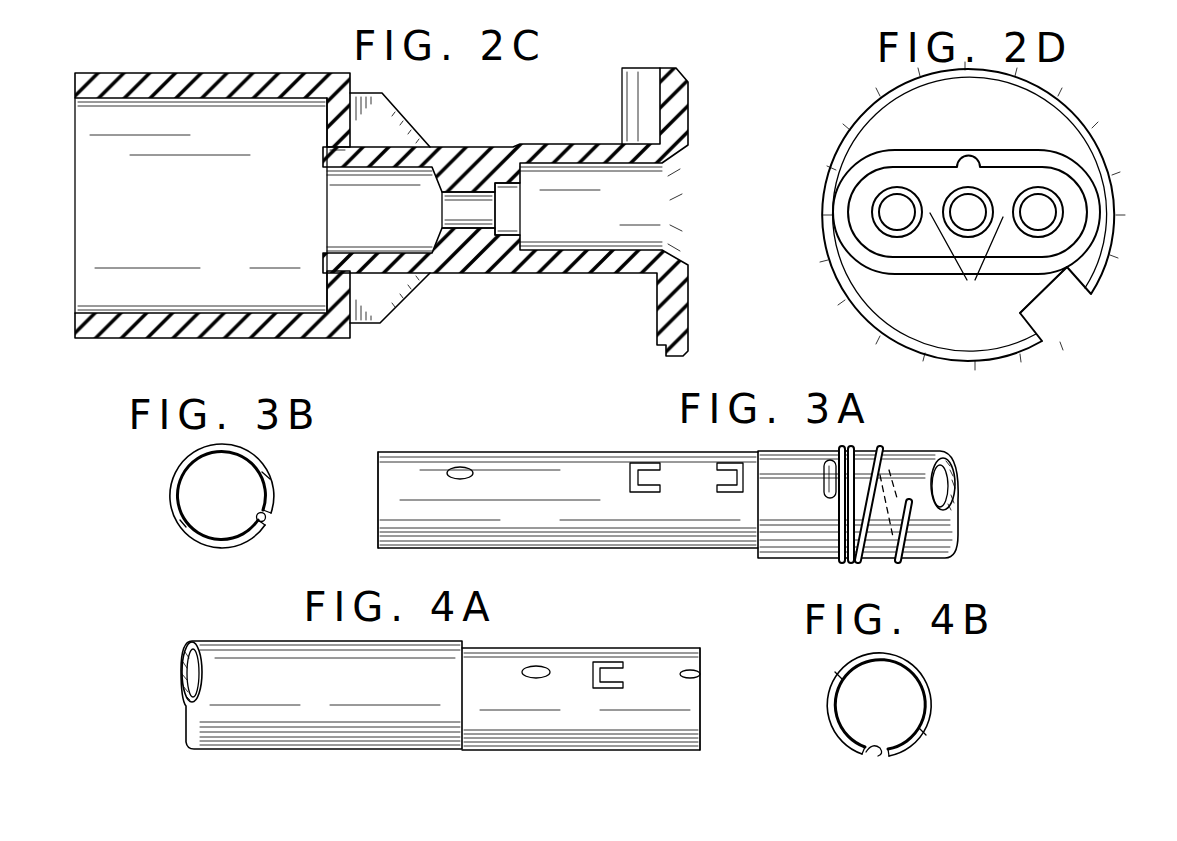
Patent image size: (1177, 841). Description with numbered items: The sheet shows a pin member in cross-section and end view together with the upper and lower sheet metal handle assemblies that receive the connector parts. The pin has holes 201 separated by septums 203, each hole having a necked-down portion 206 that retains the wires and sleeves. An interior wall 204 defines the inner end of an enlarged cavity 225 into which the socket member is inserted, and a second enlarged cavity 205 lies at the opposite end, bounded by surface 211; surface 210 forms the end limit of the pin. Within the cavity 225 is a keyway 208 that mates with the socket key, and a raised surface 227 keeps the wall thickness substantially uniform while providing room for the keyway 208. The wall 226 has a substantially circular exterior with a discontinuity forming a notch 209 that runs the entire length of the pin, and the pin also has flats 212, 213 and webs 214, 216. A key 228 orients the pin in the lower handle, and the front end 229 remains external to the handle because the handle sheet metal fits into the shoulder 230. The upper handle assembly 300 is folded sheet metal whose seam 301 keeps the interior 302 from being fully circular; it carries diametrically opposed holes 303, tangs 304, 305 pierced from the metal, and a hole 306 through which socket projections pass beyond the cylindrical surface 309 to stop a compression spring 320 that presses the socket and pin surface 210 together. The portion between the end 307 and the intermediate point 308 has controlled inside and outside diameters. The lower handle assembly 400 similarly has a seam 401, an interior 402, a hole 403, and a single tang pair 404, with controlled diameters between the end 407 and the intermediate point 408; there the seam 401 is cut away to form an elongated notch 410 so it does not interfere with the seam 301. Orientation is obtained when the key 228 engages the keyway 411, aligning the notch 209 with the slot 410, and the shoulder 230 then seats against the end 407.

In FIG. 2C, the holes 201 is at (512, 208).
In FIG. 2D, the holes 201 is at (960, 217).
In FIG. 2D, the septums 203 is at (966, 260).
In FIG. 2C, the interior wall 204 is at (527, 243).
In FIG. 2C, the enlarged cavity 205 is at (172, 216).
In FIG. 2C, the necked-down portion 206 is at (449, 222).
In FIG. 2D, the necked-down portion 206 is at (890, 192).
In FIG. 2C, the keyway 208 is at (560, 163).
In FIG. 2D, the keyway 208 is at (972, 163).
In FIG. 2D, the notch 209 is at (1047, 297).
In FIG. 2C, the surface 210 is at (690, 92).
In FIG. 2D, the surface 210 is at (910, 331).
In FIG. 2C, the surface 211 is at (323, 130).
In FIG. 2C, the flat 212 is at (448, 146).
In FIG. 2C, the flat 213 is at (500, 274).
In FIG. 2C, the web 214 is at (385, 118).
In FIG. 2C, the web 216 is at (393, 292).
In FIG. 2C, the enlarged cavity 225 is at (604, 220).
In FIG. 2C, the wall 226 is at (208, 82).
In FIG. 2C, the raised surface 227 is at (588, 143).
In FIG. 2C, the key 228 is at (640, 78).
In FIG. 2C, the front end 229 is at (684, 338).
In FIG. 2C, the shoulder 230 is at (662, 349).
In FIG. 3A, the upper handle assembly 300 is at (568, 433).
In FIG. 3B, the seam 301 is at (267, 517).
In FIG. 3A, the seam 301 is at (632, 520).
In FIG. 3B, the interior 302 is at (202, 493).
In FIG. 3B, the holes 303 is at (267, 473).
In FIG. 3A, the holes 303 is at (458, 469).
In FIG. 3A, the tang 304 is at (645, 475).
In FIG. 3A, the tang 305 is at (730, 477).
In FIG. 3A, the hole 306 is at (826, 476).
In FIG. 3A, the end 307 is at (378, 523).
In FIG. 3A, the intermediate point 308 is at (758, 532).
In FIG. 3A, the cylindrical surface 309 is at (955, 468).
In FIG. 3A, the compression spring 320 is at (880, 470).
In FIG. 4A, the lower handle assembly 400 is at (633, 630).
In FIG. 4A, the seam 401 is at (383, 732).
In FIG. 4B, the seam 401 is at (888, 748).
In FIG. 4B, the interior 402 is at (864, 706).
In FIG. 4A, the hole 403 is at (538, 668).
In FIG. 4B, the hole 403 is at (838, 676).
In FIG. 4A, the tang pair 404 is at (612, 675).
In FIG. 4A, the end 407 is at (702, 725).
In FIG. 4A, the intermediate point 408 is at (462, 665).
In FIG. 4A, the elongated notch 410 is at (578, 737).
In FIG. 4B, the elongated notch 410 is at (847, 748).
In FIG. 4A, the keyway 411 is at (699, 673).